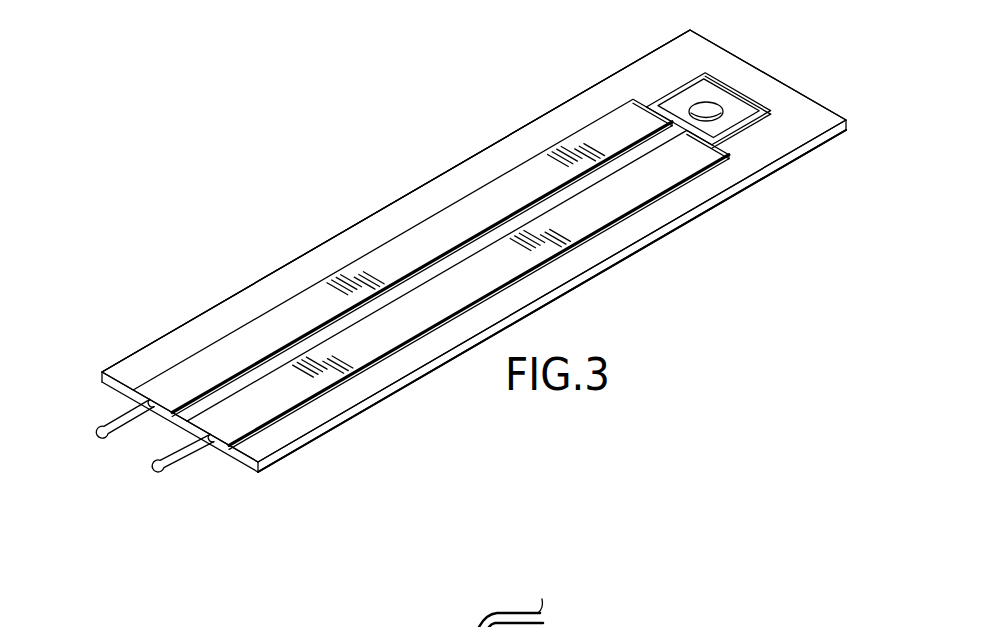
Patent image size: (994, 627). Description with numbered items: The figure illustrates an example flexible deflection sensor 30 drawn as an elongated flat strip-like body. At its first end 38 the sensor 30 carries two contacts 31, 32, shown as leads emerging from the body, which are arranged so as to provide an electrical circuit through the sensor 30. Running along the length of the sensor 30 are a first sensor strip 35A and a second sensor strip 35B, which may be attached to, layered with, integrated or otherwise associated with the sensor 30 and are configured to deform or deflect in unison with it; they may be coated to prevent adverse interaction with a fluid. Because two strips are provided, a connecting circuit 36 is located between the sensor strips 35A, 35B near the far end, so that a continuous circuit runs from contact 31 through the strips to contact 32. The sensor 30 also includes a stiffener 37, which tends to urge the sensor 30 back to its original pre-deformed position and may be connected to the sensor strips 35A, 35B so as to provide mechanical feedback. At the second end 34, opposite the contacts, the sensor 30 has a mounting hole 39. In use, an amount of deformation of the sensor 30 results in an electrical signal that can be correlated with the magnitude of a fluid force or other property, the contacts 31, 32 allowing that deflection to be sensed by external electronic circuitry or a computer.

The flexible deflection sensor 30 is at (372, 163).
The contact 31 is at (160, 469).
The contact 32 is at (101, 432).
The second end 34 is at (830, 155).
The first sensor strip 35A is at (595, 218).
The second sensor strip 35B is at (517, 182).
The connecting circuit 36 is at (757, 104).
The stiffener 37 is at (292, 277).
The first end 38 is at (300, 466).
The mounting hole 39 is at (707, 106).